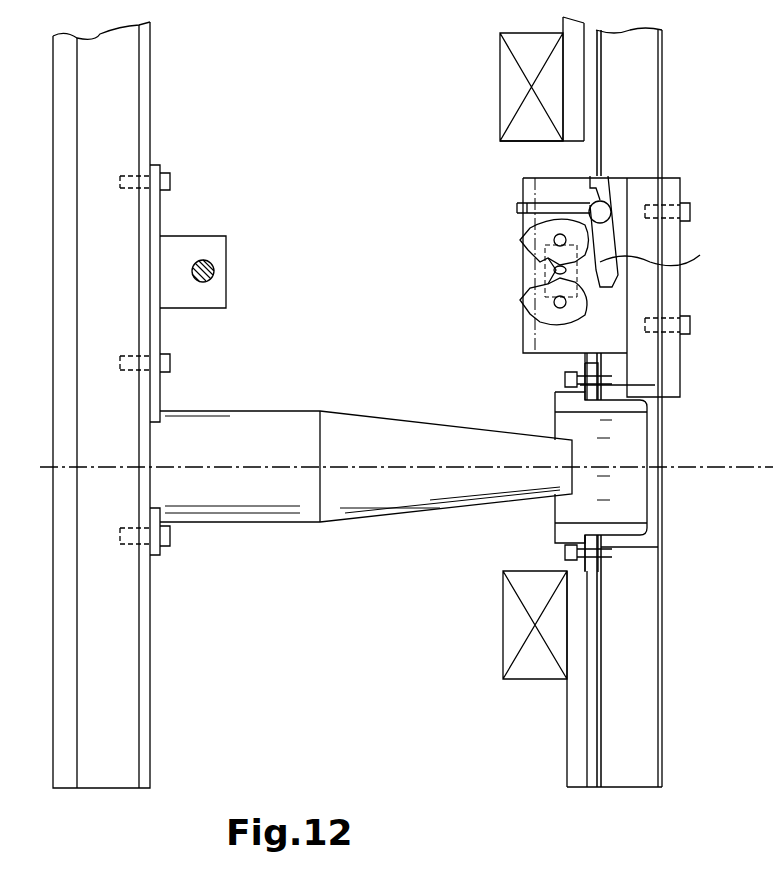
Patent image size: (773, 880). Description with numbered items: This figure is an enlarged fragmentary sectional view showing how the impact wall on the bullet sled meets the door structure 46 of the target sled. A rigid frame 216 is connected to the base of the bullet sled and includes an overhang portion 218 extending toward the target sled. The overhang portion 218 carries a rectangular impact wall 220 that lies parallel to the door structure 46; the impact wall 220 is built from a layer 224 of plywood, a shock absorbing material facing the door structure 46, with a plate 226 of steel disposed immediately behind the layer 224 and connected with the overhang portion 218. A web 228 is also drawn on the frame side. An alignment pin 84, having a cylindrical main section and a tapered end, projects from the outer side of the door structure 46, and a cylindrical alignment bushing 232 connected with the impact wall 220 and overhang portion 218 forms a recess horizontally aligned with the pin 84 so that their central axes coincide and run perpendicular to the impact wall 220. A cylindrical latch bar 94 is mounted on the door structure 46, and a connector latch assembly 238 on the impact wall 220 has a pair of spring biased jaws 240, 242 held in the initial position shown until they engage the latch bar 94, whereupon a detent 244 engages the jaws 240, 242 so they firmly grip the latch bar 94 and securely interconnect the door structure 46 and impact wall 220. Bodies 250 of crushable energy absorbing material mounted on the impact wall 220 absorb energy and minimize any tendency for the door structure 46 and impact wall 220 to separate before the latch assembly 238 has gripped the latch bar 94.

The door structure 46 is at (111, 793).
The latch bar 94 is at (215, 272).
The alignment pin 84 is at (390, 418).
The frame 216 is at (662, 106).
The overhang portion 218 is at (640, 150).
The impact wall 220 is at (600, 83).
The layer of plywood 224 is at (580, 788).
The plate of steel 226 is at (596, 788).
The rail web 228 is at (603, 745).
The alignment bushing 232 is at (620, 528).
The connector latch assembly 238 is at (515, 250).
The jaw 240 is at (552, 270).
The jaw 242 is at (545, 285).
The detent 244 is at (662, 246).
The bodies of energy absorbing material 250 is at (530, 84).